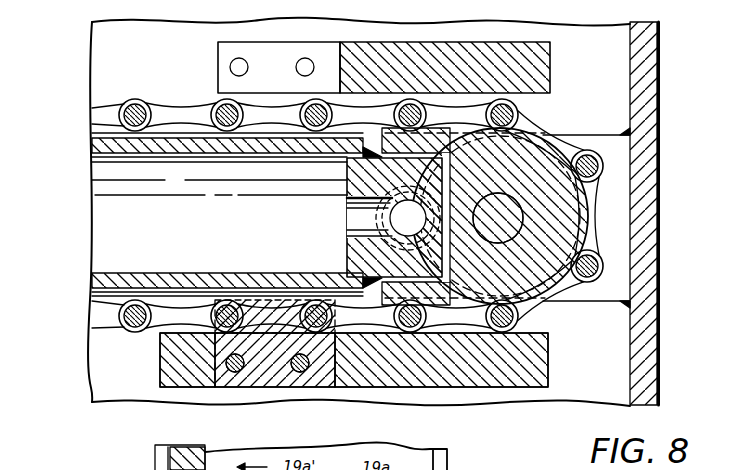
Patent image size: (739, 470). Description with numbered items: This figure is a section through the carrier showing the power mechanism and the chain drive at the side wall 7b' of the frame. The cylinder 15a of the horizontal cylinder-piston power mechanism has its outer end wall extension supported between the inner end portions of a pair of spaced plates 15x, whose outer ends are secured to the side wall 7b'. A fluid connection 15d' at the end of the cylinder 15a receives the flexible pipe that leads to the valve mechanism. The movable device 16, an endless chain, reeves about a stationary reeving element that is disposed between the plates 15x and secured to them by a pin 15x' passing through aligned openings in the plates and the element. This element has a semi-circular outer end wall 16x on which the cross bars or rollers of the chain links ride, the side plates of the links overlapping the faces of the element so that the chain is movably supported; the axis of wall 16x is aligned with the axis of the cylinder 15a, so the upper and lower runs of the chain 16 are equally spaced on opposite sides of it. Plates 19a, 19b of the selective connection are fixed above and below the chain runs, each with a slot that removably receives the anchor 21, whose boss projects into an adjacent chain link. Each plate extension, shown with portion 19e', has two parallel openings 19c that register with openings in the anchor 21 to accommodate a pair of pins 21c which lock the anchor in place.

The side wall 7b' is at (668, 213).
The plate 19a is at (543, 72).
The guide plate portion 19e' is at (250, 67).
The openings 19c is at (300, 66).
The cylinder 15a is at (120, 275).
The spaced plates 15x is at (499, 232).
The pin 15x' is at (527, 175).
The fluid connection 15d' is at (360, 217).
The movable device 16 is at (160, 318).
The semi-circular outer end wall 16x is at (563, 288).
The plate 19b is at (545, 375).
The anchor 21 is at (283, 380).
The pins 21c is at (301, 372).